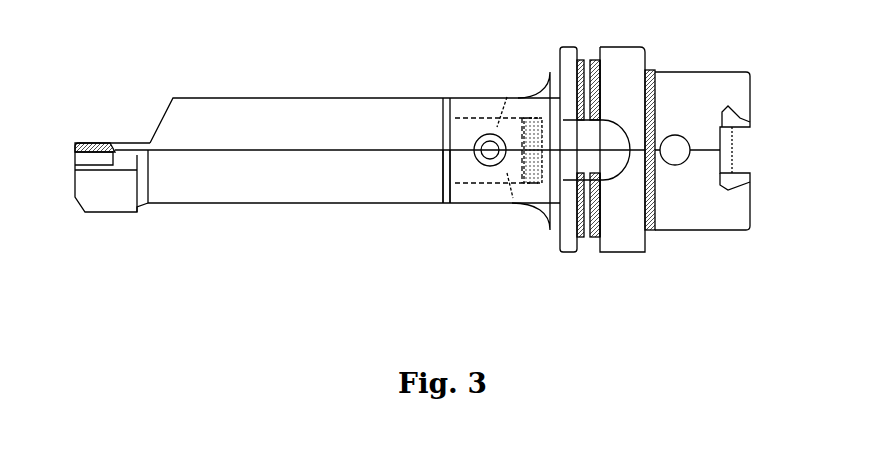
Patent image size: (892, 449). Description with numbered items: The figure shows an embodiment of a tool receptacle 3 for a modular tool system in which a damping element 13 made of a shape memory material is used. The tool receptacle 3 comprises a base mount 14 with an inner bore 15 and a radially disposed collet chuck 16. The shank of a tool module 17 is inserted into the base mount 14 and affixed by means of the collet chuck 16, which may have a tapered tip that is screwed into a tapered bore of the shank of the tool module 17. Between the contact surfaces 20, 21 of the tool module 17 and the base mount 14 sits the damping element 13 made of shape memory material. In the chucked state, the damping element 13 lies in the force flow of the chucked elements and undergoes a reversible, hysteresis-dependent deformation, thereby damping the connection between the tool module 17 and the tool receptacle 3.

The tool receptacle 3 is at (618, 70).
The damping element 13 is at (446, 97).
The base mount 14 is at (483, 99).
The inner bore 15 is at (510, 205).
The collet chuck 16 is at (508, 99).
The tool module 17 is at (273, 120).
The contact surface 20 is at (443, 204).
The contact surface 21 is at (450, 204).